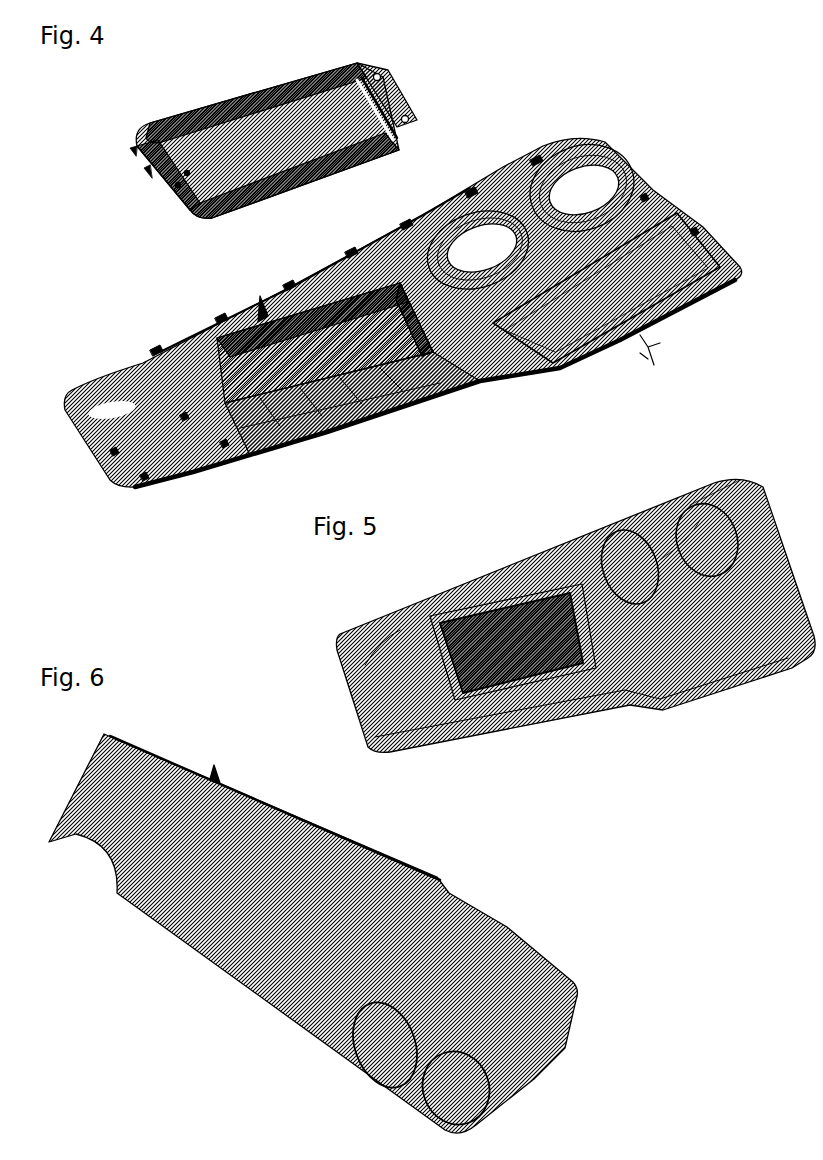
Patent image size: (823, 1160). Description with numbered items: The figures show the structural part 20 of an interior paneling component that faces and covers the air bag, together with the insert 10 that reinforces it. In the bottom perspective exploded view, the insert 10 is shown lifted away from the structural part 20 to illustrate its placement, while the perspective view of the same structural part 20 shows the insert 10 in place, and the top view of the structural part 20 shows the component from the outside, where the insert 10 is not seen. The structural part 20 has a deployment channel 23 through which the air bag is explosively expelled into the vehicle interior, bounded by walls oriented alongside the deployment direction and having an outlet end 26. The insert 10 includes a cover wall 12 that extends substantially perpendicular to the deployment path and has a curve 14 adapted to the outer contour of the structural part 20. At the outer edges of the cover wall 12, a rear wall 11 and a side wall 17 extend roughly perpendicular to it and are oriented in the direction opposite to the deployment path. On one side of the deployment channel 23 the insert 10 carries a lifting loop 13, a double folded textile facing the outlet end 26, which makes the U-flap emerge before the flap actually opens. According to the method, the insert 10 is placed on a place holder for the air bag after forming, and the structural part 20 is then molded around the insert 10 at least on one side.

In FIG. 4, the insert 10 is at (322, 118).
In FIG. 5, the insert 10 is at (495, 623).
In FIG. 6, the insert 10 is at (217, 770).
In FIG. 4, the rear wall 11 is at (243, 103).
In FIG. 4, the cover wall 12 is at (223, 147).
In FIG. 4, the lifting loop 13 is at (282, 107).
In FIG. 4, the curve 14 is at (260, 307).
In FIG. 4, the side wall 17 is at (383, 113).
In FIG. 4, the structural part 20 is at (637, 177).
In FIG. 5, the structural part 20 is at (640, 510).
In FIG. 4, the deployment channel 23 is at (353, 303).
In FIG. 4, the outlet end 26 is at (373, 312).